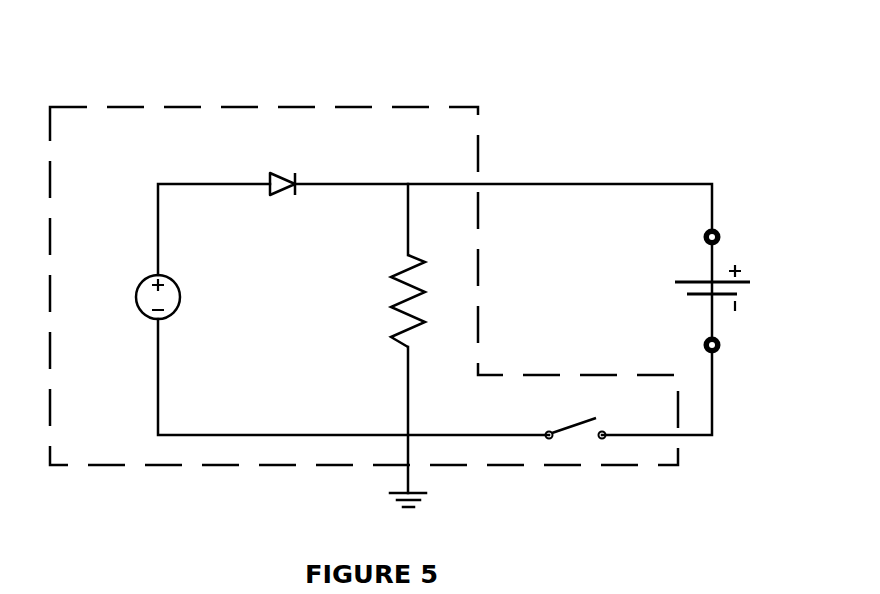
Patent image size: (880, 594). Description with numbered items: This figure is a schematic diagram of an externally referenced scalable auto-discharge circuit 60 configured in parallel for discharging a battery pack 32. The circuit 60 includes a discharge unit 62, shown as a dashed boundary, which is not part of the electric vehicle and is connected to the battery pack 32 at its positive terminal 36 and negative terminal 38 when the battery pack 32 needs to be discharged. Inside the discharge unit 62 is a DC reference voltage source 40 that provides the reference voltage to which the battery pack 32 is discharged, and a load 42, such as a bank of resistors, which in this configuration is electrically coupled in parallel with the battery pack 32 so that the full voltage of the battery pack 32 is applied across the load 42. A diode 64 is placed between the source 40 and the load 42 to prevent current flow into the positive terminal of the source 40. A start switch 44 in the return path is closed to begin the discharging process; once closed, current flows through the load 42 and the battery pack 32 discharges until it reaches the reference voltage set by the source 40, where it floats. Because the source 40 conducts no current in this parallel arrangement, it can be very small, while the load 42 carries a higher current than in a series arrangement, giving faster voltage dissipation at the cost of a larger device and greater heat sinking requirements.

The auto-discharge circuit 60 is at (265, 59).
The discharge unit 62 is at (452, 108).
The diode 64 is at (270, 177).
The DC reference voltage source 40 is at (135, 300).
The load 42 is at (390, 310).
The battery pack 32 is at (677, 282).
The positive terminal 36 is at (721, 238).
The negative terminal 38 is at (721, 345).
The start switch 44 is at (578, 422).